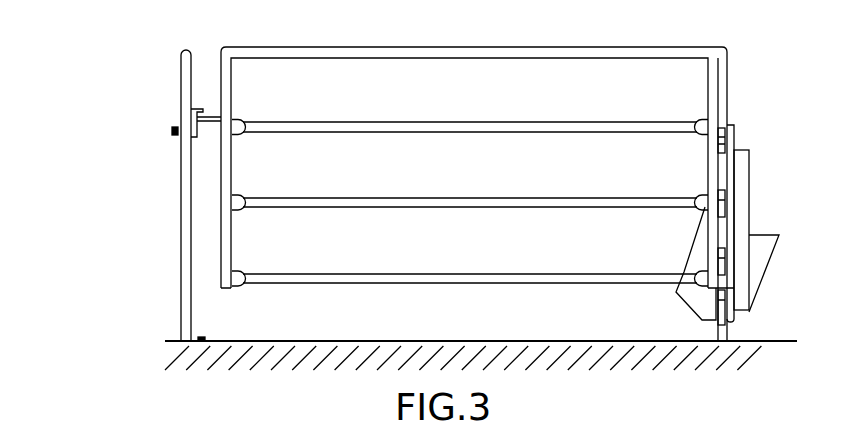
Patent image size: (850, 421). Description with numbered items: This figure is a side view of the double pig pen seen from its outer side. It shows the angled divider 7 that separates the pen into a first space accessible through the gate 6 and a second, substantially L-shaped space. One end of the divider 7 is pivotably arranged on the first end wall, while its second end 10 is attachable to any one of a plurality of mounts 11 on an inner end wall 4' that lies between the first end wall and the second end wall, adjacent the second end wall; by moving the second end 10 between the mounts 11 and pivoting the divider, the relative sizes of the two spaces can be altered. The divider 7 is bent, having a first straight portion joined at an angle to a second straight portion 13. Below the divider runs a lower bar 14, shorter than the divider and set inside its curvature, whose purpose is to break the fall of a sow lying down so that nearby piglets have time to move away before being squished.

The inner end wall 4' is at (147, 180).
The gate 6 is at (730, 127).
The angled divider 7 is at (567, 197).
The second end 10 is at (214, 127).
The mounts 11 is at (173, 130).
The second straight portion 13 is at (337, 202).
The lower bar 14 is at (515, 283).